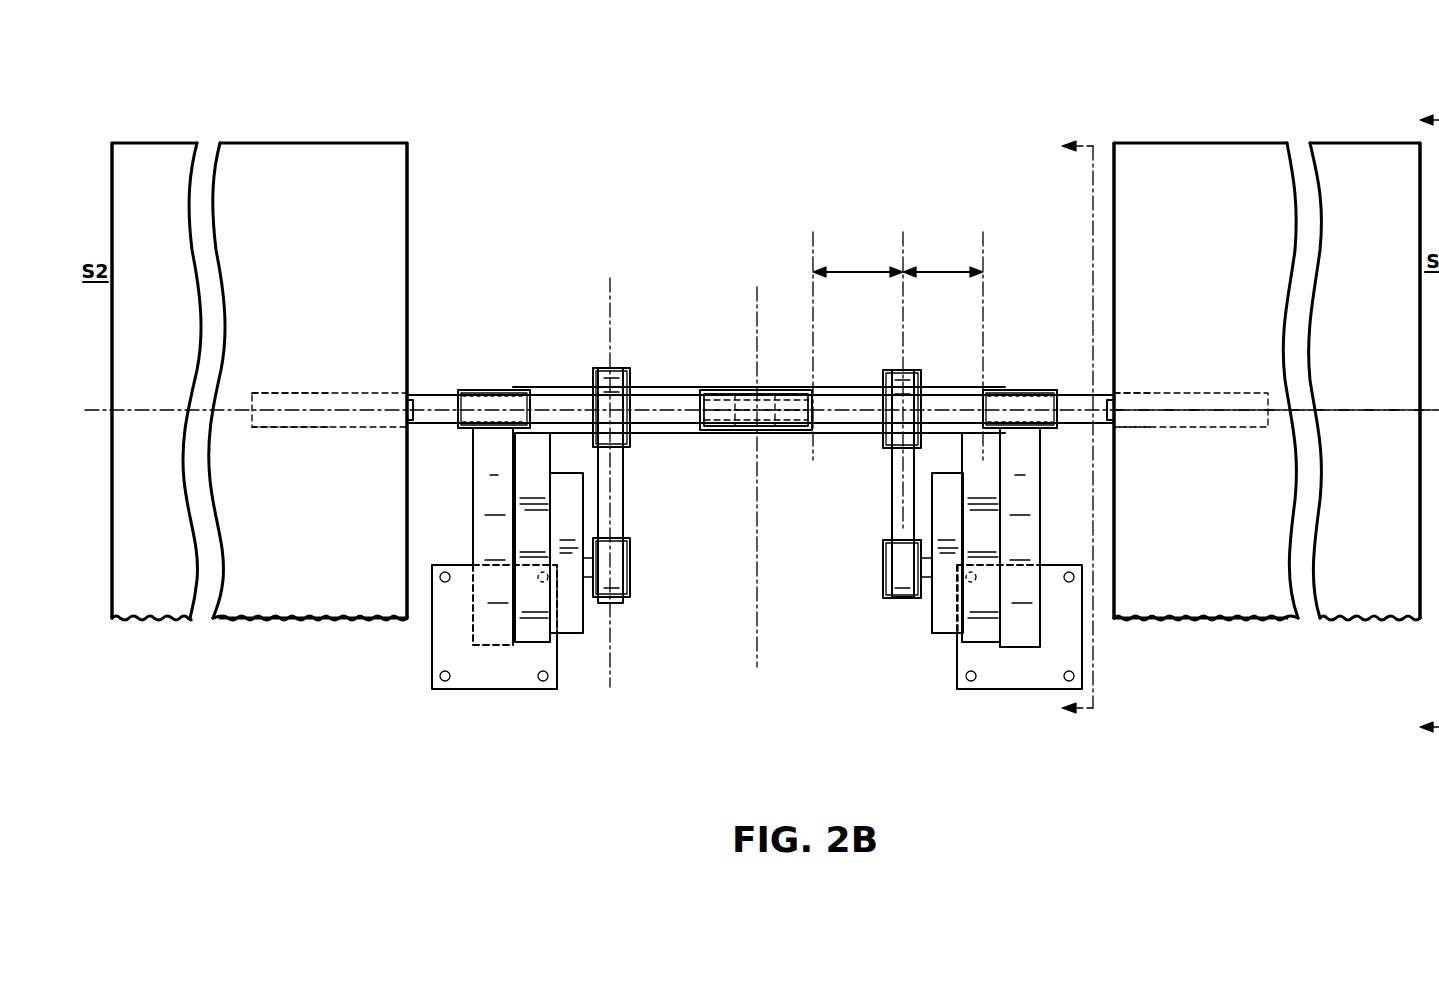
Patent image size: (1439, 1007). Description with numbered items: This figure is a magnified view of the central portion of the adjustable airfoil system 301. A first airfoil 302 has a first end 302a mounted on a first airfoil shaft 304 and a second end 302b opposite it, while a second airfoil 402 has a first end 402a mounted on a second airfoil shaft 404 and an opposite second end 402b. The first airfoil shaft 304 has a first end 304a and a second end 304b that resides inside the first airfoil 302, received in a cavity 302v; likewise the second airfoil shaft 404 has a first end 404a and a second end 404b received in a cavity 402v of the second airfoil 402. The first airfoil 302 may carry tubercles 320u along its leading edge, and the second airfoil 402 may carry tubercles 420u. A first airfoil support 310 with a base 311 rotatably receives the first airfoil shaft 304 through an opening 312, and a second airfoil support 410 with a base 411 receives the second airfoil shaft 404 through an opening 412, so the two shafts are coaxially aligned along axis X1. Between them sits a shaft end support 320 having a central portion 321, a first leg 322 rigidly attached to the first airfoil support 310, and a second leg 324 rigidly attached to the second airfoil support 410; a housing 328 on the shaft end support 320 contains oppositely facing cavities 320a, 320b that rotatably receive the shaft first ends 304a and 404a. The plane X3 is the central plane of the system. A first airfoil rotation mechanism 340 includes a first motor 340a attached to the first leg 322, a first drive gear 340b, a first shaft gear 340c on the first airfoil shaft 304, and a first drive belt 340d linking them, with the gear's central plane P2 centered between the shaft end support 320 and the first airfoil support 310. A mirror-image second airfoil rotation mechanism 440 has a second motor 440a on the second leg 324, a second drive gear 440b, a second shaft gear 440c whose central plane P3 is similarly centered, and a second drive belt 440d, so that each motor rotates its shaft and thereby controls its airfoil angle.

The second airfoil 402 is at (274, 143).
The first end of second airfoil 402a is at (373, 168).
The second end of second airfoil 402b is at (154, 165).
The cavity of second airfoil 402v is at (325, 428).
The tubercles 420u is at (252, 618).
The first airfoil 302 is at (1353, 618).
The first end of first airfoil 302a is at (1155, 163).
The second end of first airfoil 302b is at (1392, 573).
The cavity of first airfoil 302v is at (1142, 393).
The tubercles 320u is at (1240, 605).
The first airfoil shaft 304 is at (937, 398).
The first end of first airfoil shaft 304a is at (800, 395).
The second end of first airfoil shaft 304b is at (1183, 393).
The second airfoil shaft 404 is at (548, 405).
The first end of second airfoil shaft 404a is at (722, 400).
The second end of second airfoil shaft 404b is at (293, 400).
The shaft end support 320 is at (748, 386).
The first cavity of shaft end support 320a is at (785, 440).
The second cavity of shaft end support 320b is at (712, 390).
The housing 328 is at (703, 398).
The central portion of shaft end support 321 is at (986, 393).
The opening of second airfoil support 412 is at (482, 393).
The opening of first airfoil support 312 is at (1056, 430).
The first airfoil support 310 is at (1022, 490).
The base of first airfoil support 311 is at (1082, 640).
The first leg of shaft end support 322 is at (988, 534).
The second leg of shaft end support 324 is at (533, 628).
The second airfoil support 410 is at (493, 622).
The base of second airfoil support 411 is at (432, 652).
The first airfoil rotation mechanism 340 is at (905, 625).
The first motor 340a is at (943, 633).
The first drive gear 340b is at (883, 575).
The first shaft gear 340c is at (884, 392).
The first drive belt 340d is at (892, 478).
The second airfoil rotation mechanism 440 is at (585, 655).
The second motor 440a is at (572, 633).
The second drive gear 440b is at (631, 577).
The second shaft gear 440c is at (596, 390).
The second drive belt 440d is at (625, 505).
The adjustable airfoil system 301 is at (1059, 253).
The central plane of first shaft gear P2 is at (903, 235).
The central plane of second shaft gear P3 is at (585, 300).
The axis X1 is at (1225, 405).
The central plane X3 is at (735, 270).